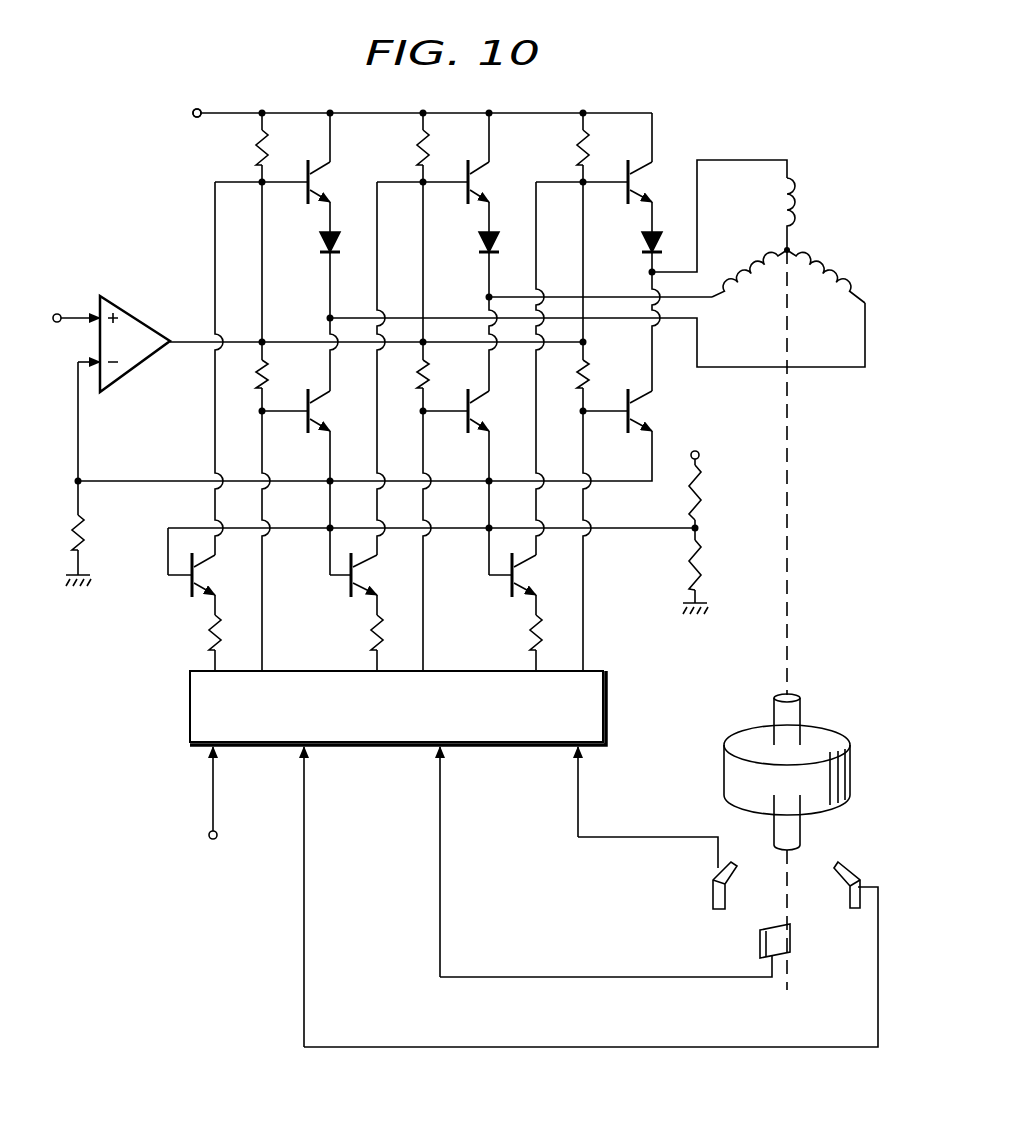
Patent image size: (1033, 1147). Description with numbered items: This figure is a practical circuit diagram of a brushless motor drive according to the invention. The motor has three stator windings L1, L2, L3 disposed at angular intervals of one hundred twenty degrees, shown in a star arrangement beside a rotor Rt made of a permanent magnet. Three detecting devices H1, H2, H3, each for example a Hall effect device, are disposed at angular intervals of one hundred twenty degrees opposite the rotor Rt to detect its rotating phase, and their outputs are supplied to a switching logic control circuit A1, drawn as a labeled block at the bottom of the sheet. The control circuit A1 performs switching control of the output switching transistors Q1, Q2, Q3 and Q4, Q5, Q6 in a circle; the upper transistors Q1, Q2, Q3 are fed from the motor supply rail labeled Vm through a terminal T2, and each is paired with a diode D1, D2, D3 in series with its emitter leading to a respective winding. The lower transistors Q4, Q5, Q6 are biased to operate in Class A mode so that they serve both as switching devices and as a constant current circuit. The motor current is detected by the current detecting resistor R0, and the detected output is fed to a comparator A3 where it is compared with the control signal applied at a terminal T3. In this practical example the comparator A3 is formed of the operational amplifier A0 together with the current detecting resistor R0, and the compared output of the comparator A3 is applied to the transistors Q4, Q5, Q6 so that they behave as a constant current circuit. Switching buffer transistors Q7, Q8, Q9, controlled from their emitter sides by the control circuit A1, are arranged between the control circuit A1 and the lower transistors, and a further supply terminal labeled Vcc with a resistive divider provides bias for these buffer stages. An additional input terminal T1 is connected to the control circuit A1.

The motor supply voltage terminal Vm is at (385, 119).
The supply terminal T2 is at (196, 118).
The input terminal T3 is at (56, 323).
The input terminal T1 is at (212, 840).
The comparator A3 is at (126, 376).
The operational amplifier A0 is at (138, 362).
The current detecting resistor R0 is at (84, 542).
The output switching transistor Q1 is at (625, 206).
The output switching transistor Q2 is at (465, 206).
The output switching transistor Q3 is at (305, 206).
The output switching transistor Q4 is at (627, 432).
The output switching transistor Q5 is at (467, 432).
The output switching transistor Q6 is at (307, 432).
The switching buffer transistor Q7 is at (190, 602).
The switching buffer transistor Q8 is at (349, 602).
The switching buffer transistor Q9 is at (510, 602).
The diode D1 is at (650, 254).
The diode D2 is at (488, 252).
The diode D3 is at (320, 252).
The logic supply voltage terminal Vcc is at (707, 516).
The stator winding L1 is at (782, 200).
The stator winding L2 is at (738, 302).
The stator winding L3 is at (842, 300).
The rotor Rt is at (852, 764).
The detecting device H1 is at (724, 913).
The detecting device H2 is at (778, 960).
The detecting device H3 is at (852, 878).
The switching logic control circuit A1 is at (372, 747).